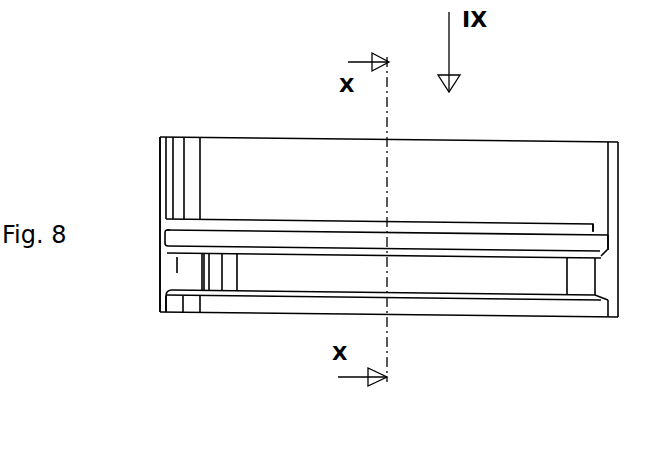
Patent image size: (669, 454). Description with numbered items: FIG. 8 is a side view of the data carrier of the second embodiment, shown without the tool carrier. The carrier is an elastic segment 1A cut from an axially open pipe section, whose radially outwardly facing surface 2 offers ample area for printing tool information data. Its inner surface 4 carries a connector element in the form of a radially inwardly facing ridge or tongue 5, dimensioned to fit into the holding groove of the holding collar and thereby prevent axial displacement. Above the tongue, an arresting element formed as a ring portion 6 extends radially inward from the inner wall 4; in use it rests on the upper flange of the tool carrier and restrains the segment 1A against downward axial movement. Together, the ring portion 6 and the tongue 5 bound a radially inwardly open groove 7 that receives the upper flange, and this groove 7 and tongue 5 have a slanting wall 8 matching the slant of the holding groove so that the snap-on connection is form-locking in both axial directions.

The elastic segment 1A is at (560, 133).
The radially outwardly facing surface 2 is at (663, 182).
The inner surface 4 is at (500, 178).
The tongue 5 is at (438, 275).
The ring portion 6 is at (600, 222).
The groove 7 is at (253, 240).
The slanting wall 8 is at (160, 255).